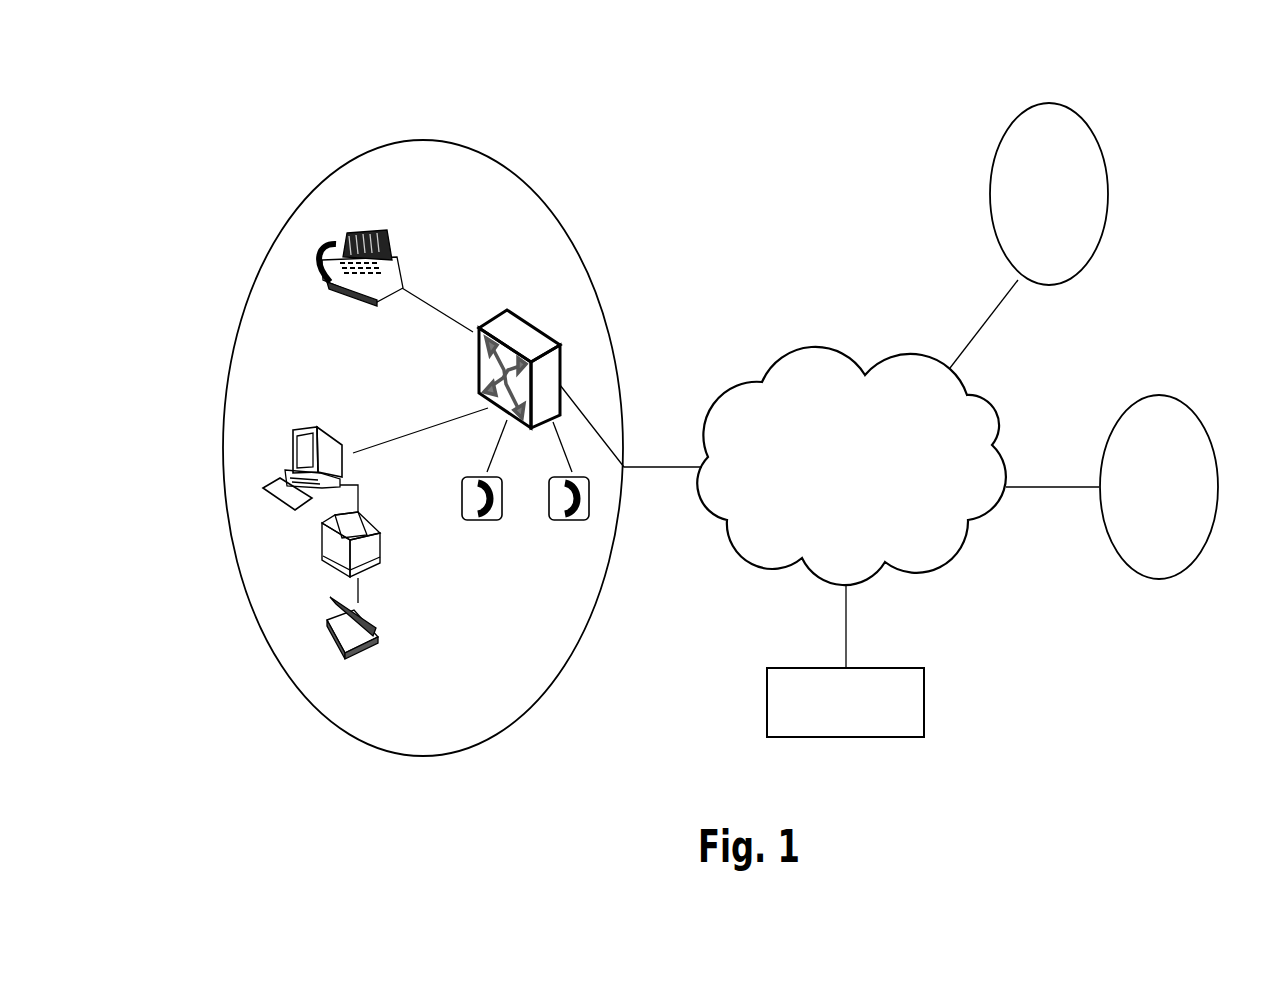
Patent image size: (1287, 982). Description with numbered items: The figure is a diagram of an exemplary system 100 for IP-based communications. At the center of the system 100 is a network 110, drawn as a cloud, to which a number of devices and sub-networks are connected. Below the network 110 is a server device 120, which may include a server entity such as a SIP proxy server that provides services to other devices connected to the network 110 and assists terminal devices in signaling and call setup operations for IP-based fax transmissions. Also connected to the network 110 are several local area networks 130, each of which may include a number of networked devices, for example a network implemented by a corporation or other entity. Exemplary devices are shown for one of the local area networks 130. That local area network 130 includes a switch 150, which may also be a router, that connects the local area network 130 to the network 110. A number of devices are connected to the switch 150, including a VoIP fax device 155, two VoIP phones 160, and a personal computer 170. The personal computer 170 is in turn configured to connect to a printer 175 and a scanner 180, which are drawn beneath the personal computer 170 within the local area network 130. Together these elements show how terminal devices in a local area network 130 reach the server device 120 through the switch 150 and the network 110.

The system 100 is at (276, 76).
The network 110 is at (1020, 398).
The server device 120 is at (922, 668).
The local area network 130 is at (502, 166).
The switch 150 is at (558, 321).
The VoIP fax device 155 is at (400, 252).
The VoIP phone 160 is at (483, 521).
The personal computer 170 is at (322, 428).
The printer 175 is at (375, 533).
The scanner 180 is at (377, 626).